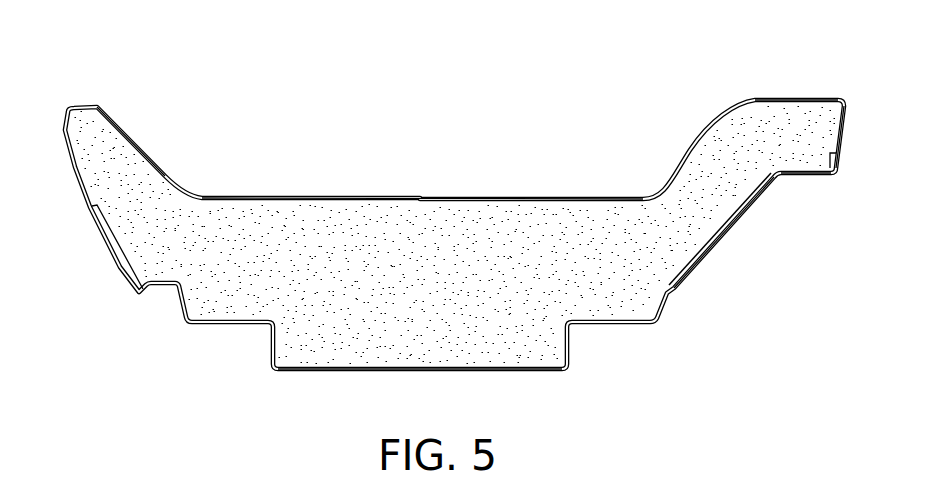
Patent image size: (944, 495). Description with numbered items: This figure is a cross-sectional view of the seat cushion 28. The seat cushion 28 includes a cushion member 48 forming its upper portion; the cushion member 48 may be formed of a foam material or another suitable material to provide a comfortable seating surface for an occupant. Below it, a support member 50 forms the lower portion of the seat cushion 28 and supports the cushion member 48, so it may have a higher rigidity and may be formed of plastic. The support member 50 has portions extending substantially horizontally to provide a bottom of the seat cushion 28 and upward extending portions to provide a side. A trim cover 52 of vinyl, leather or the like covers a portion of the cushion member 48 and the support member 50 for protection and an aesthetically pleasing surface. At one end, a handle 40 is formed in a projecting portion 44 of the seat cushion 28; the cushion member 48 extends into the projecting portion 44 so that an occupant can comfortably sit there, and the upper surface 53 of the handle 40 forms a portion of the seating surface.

The seat cushion 28 is at (480, 197).
The handle 40 is at (835, 175).
The projecting portion 44 is at (792, 99).
The cushion member 48 is at (714, 215).
The support member 50 is at (360, 372).
The trim cover 52 is at (200, 196).
The upper surface 53 is at (831, 99).